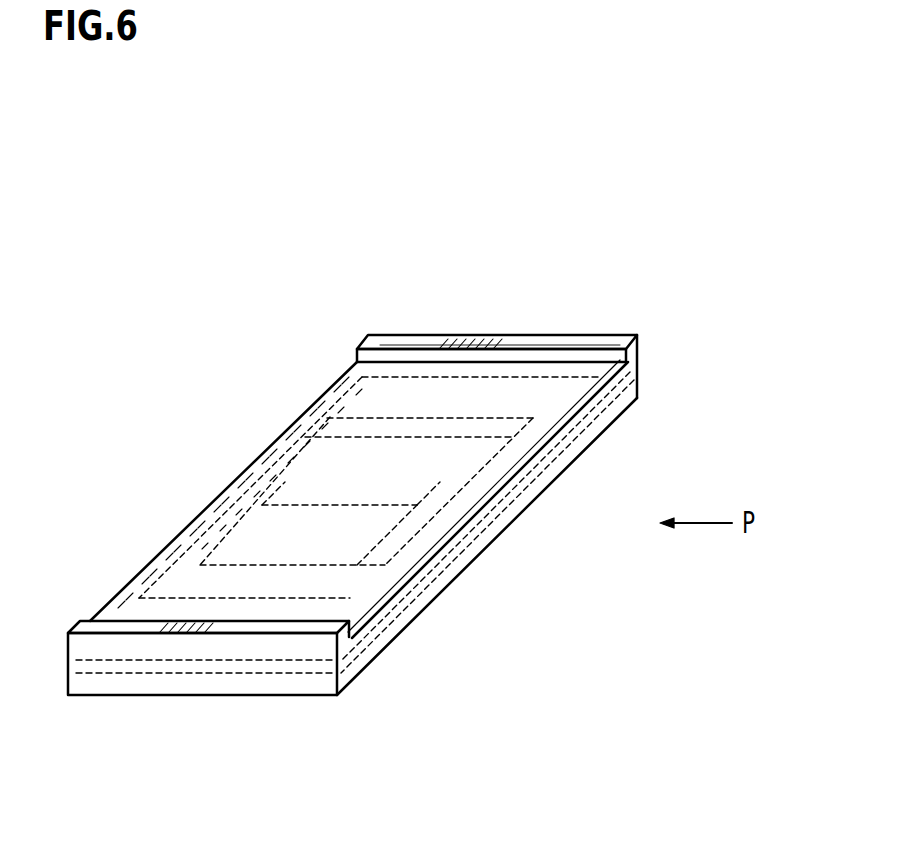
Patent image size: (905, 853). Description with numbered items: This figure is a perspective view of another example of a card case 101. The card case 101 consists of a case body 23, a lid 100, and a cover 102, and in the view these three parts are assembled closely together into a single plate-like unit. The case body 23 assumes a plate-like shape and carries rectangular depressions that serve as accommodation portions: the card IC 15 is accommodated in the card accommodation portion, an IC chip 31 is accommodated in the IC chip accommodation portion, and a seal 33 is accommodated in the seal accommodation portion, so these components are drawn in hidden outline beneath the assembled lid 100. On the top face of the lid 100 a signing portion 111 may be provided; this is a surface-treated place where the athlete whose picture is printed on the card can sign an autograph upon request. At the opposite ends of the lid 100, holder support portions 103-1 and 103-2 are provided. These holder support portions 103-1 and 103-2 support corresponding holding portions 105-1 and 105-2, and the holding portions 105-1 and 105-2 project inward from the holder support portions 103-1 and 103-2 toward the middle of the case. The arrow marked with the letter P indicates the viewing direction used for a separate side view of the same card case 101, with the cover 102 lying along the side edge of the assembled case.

The card case 101 is at (656, 235).
The lid 100 is at (642, 363).
The cover 102 is at (281, 435).
The case body 23 is at (625, 385).
The seal 33 is at (537, 403).
The IC chip 31 is at (383, 385).
The card IC 15 is at (457, 482).
The signing portion 111 is at (380, 545).
The holder support portion 103-1 is at (634, 344).
The holder support portion 103-2 is at (340, 640).
The holding portion 105-1 is at (548, 342).
The holding portion 105-2 is at (345, 620).